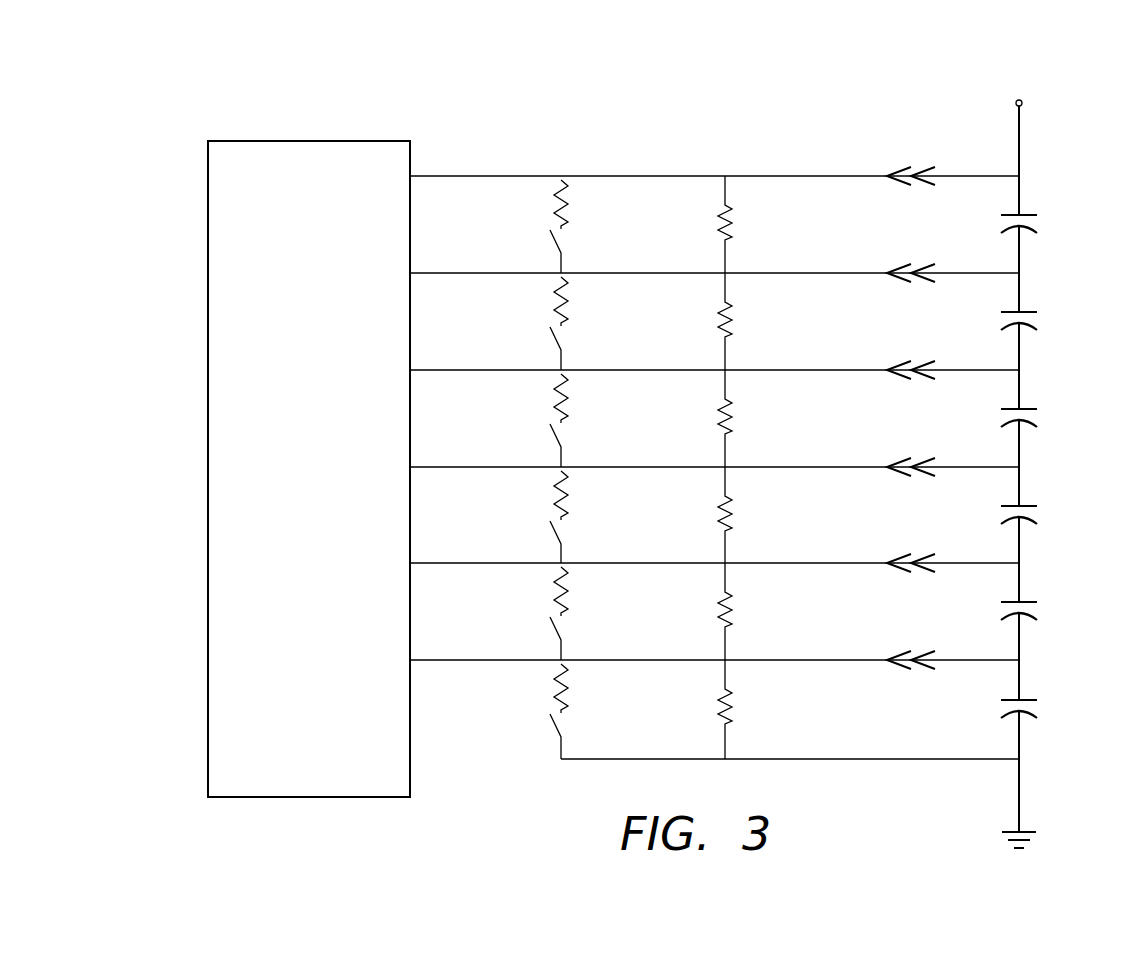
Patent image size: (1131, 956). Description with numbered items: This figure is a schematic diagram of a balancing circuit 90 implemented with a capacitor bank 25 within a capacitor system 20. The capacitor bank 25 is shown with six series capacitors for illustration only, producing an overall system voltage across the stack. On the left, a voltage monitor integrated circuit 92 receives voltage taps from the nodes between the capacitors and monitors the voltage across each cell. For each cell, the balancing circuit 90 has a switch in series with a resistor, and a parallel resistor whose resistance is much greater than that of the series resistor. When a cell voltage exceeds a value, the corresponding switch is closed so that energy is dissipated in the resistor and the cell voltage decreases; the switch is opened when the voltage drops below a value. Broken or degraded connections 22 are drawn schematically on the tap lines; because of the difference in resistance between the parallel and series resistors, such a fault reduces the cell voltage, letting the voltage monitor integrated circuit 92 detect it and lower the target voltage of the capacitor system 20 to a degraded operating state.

The capacitor system 20 is at (983, 44).
The broken or degraded connections 22 is at (921, 152).
The capacitor bank 25 is at (1045, 152).
The balancing circuit 90 is at (648, 119).
The voltage monitor integrated circuit 92 is at (309, 158).